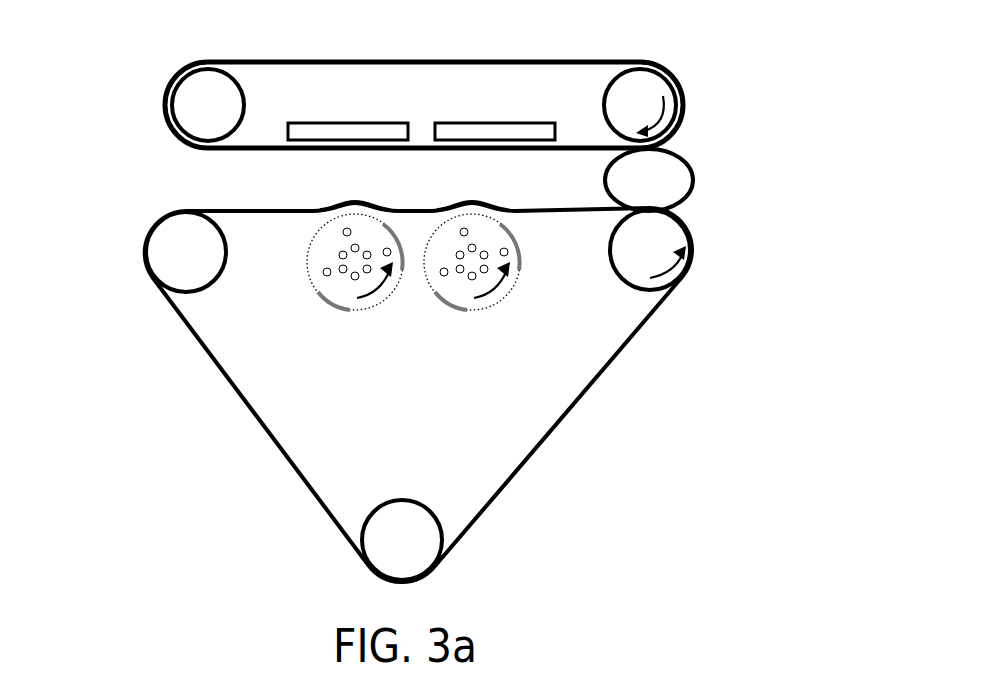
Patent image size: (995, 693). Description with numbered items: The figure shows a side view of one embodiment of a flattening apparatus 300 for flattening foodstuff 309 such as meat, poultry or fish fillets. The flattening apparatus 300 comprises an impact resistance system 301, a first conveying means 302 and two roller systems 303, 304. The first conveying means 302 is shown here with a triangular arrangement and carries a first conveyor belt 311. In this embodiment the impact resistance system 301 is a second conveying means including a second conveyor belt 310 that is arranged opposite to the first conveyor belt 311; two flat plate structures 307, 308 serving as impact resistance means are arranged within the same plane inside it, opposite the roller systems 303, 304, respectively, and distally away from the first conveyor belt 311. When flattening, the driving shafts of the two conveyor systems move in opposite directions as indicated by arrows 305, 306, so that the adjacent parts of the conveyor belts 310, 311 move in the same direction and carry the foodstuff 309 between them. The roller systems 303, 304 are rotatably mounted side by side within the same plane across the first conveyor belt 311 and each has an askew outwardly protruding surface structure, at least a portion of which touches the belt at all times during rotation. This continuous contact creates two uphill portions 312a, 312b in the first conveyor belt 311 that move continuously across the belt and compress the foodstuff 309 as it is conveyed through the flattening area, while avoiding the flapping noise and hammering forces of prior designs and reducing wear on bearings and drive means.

The flattening apparatus 300 is at (791, 99).
The impact resistance system 301 is at (121, 86).
The first conveying means 302 is at (718, 371).
The roller system 303 is at (340, 310).
The roller system 304 is at (470, 310).
The arrow 305 is at (689, 265).
The arrow 306 is at (679, 108).
The flat plate structure 307 is at (347, 128).
The flat plate structure 308 is at (490, 128).
The foodstuff 309 is at (693, 185).
The second conveyor belt 310 is at (250, 148).
The first conveyor belt 311 is at (253, 213).
The uphill portion 312a is at (363, 206).
The uphill portion 312b is at (480, 205).